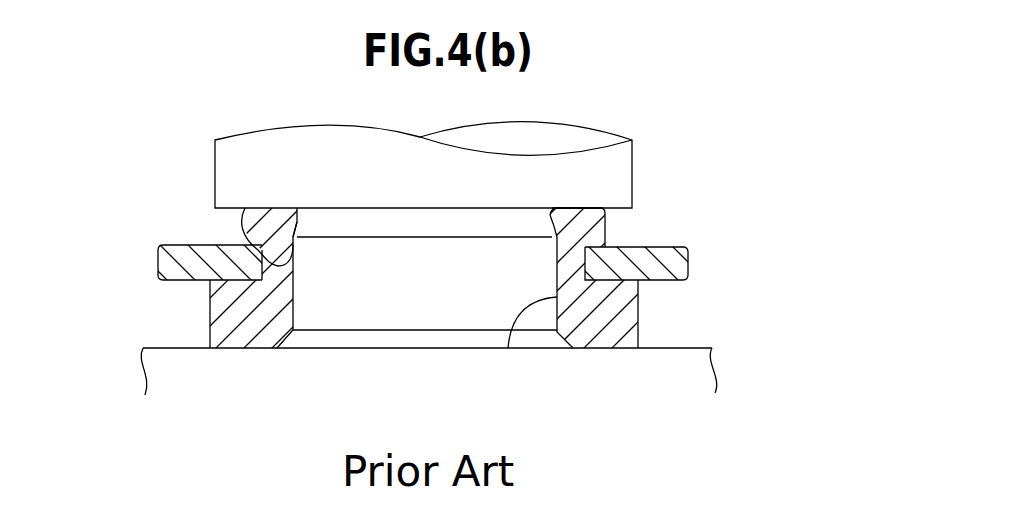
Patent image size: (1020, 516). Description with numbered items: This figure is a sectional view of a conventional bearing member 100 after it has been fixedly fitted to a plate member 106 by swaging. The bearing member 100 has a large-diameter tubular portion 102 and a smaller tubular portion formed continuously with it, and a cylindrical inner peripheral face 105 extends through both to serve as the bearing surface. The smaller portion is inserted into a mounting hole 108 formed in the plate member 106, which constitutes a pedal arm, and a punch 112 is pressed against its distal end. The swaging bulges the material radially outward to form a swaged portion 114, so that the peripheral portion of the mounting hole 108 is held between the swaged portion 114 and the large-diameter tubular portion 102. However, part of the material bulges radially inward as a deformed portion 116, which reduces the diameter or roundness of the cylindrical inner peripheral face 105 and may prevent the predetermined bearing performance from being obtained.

The bearing member 100 is at (184, 312).
The large-diameter tubular portion 102 is at (605, 310).
The cylindrical inner peripheral face 105 is at (525, 355).
The plate member 106 is at (660, 262).
The mounting hole 108 is at (260, 254).
The punch 112 is at (615, 175).
The swaged portion 114 is at (597, 228).
The deformed portion 116 is at (297, 222).